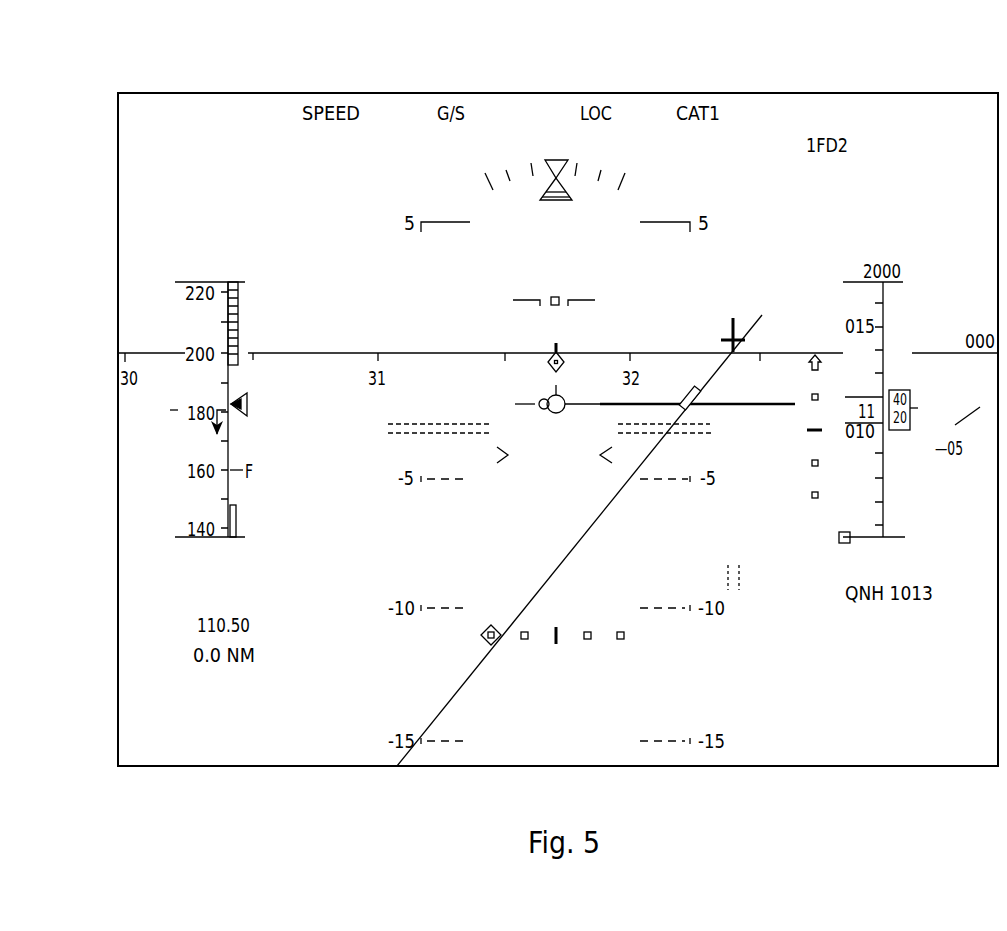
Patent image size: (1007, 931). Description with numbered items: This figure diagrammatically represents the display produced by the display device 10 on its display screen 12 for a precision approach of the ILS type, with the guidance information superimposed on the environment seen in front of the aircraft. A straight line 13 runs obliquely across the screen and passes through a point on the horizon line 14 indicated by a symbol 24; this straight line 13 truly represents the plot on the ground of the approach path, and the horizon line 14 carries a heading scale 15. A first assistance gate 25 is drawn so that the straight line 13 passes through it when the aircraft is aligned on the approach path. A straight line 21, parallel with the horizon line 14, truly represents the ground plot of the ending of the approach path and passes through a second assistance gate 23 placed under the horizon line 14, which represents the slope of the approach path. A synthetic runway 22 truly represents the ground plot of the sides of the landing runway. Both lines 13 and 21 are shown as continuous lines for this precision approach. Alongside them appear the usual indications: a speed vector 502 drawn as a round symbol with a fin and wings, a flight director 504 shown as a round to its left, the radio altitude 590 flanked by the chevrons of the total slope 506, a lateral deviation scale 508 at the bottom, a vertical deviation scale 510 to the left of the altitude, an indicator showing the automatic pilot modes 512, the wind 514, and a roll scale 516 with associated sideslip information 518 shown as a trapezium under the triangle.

The display device 10 is at (284, 784).
The display screen 12 is at (797, 768).
The straight line 13 is at (610, 500).
The horizon line 14 is at (313, 348).
The heading scale 15 is at (406, 389).
The straight line 21 is at (758, 412).
The synthetic runway 22 is at (687, 394).
The second assistance gate 23 is at (406, 441).
The symbol 24 is at (746, 322).
The first assistance gate 25 is at (745, 589).
The speed vector 502 is at (582, 389).
The flight director 504 is at (541, 408).
The total slope 506 is at (506, 460).
The lateral deviation scale 508 is at (622, 641).
The vertical deviation scale 510 is at (806, 397).
The indicator showing the automatic pilot modes 512 is at (612, 88).
The wind 514 is at (300, 214).
The roll scale 516 is at (634, 178).
The sideslip information 518 is at (566, 195).
The radio altitude 590 is at (555, 454).